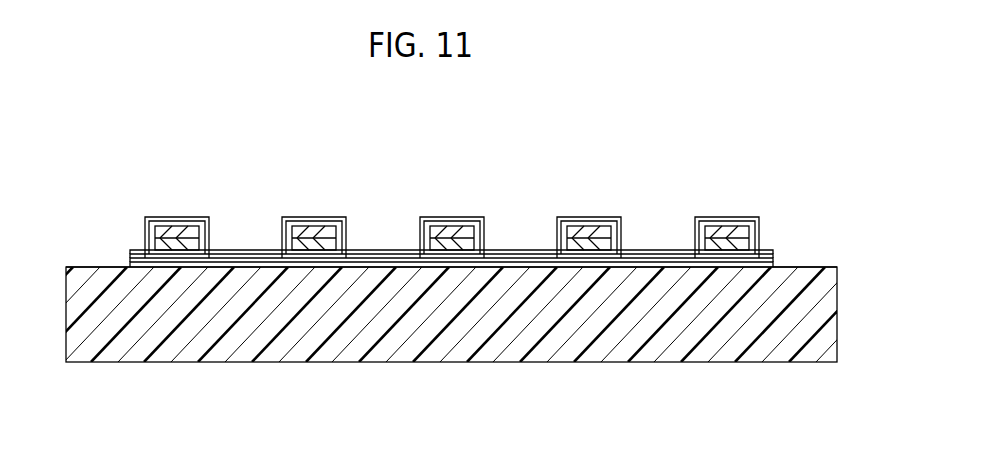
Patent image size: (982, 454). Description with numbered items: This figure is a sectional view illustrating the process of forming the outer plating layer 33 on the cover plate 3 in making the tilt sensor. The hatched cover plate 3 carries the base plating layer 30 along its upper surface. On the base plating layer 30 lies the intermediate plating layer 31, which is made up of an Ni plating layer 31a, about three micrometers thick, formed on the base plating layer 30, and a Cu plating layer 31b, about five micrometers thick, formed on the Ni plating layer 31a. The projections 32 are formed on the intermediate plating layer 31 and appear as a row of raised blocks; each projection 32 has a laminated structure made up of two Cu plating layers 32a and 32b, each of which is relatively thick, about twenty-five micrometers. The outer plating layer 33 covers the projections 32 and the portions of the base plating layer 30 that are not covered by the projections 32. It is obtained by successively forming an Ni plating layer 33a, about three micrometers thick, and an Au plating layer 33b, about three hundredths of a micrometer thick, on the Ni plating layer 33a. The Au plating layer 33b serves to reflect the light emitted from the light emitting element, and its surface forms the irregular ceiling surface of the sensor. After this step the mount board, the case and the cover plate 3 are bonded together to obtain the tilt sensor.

The cover plate 3 is at (758, 352).
The base plating layer 30 is at (776, 267).
The intermediate plating layer 31 is at (500, 232).
The Ni plating layer 31a is at (765, 262).
The Cu plating layer 31b is at (763, 258).
The projection 32 is at (500, 201).
The Cu plating layer 32a is at (761, 254).
The Cu plating layer 32b is at (759, 250).
The outer plating layer 33 is at (452, 204).
The Ni plating layer 33a is at (617, 218).
The Au plating layer 33b is at (593, 217).